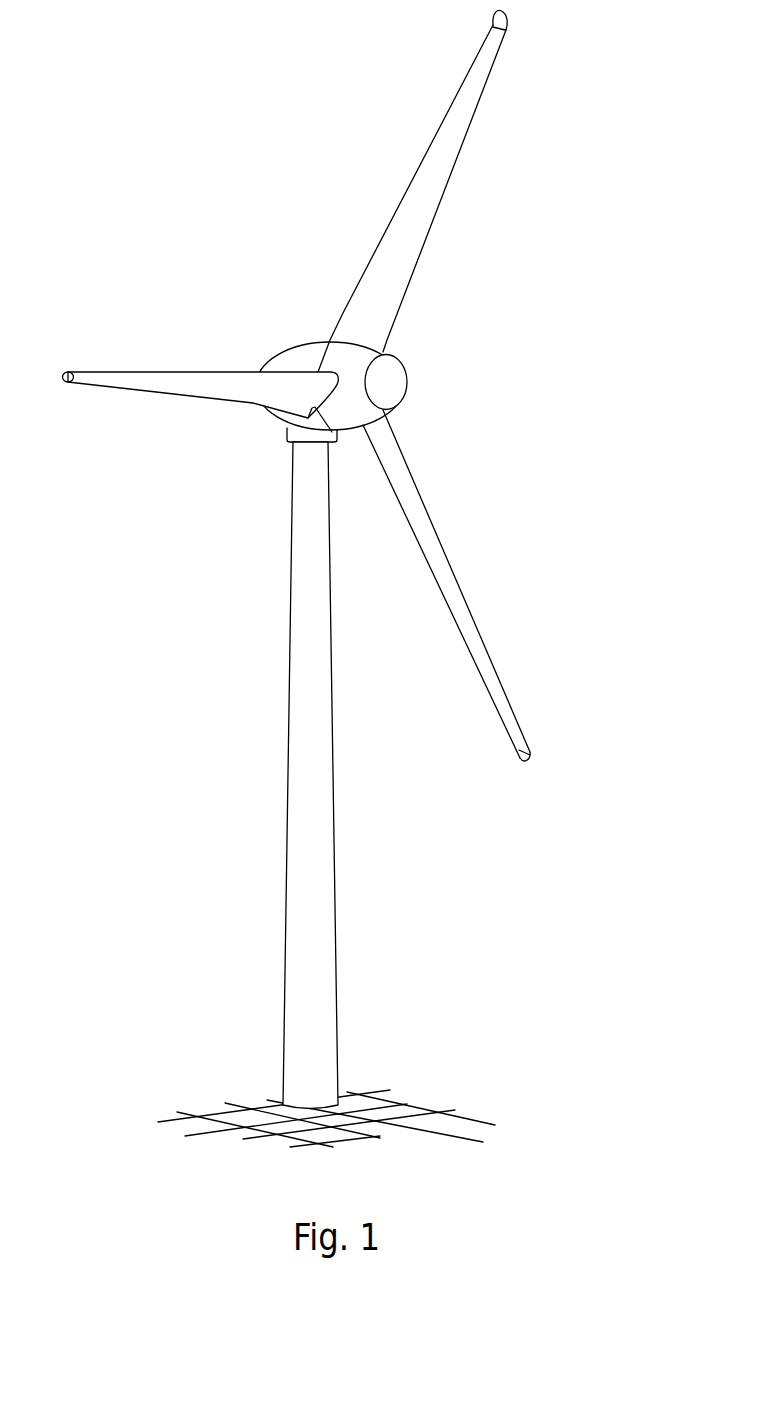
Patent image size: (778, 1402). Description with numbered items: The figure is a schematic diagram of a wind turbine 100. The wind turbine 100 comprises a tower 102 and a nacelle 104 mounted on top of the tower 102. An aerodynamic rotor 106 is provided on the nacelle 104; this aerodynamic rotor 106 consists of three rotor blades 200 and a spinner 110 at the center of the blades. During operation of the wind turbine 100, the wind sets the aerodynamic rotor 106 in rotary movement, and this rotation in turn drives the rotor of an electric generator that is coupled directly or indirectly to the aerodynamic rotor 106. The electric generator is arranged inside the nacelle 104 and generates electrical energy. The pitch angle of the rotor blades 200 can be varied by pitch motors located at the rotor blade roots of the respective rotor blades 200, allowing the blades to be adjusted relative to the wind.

The wind turbine 100 is at (348, 560).
The tower 102 is at (317, 873).
The nacelle 104 is at (295, 355).
The aerodynamic rotor 106 is at (348, 386).
The spinner 110 is at (392, 382).
The rotor blades 200 is at (453, 140).